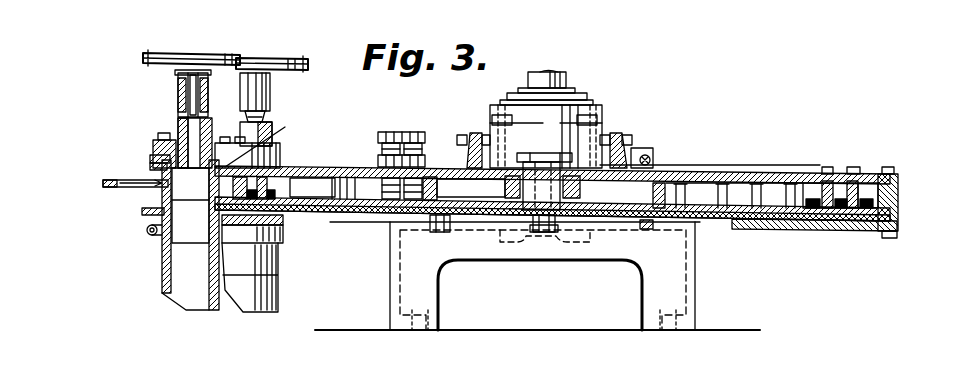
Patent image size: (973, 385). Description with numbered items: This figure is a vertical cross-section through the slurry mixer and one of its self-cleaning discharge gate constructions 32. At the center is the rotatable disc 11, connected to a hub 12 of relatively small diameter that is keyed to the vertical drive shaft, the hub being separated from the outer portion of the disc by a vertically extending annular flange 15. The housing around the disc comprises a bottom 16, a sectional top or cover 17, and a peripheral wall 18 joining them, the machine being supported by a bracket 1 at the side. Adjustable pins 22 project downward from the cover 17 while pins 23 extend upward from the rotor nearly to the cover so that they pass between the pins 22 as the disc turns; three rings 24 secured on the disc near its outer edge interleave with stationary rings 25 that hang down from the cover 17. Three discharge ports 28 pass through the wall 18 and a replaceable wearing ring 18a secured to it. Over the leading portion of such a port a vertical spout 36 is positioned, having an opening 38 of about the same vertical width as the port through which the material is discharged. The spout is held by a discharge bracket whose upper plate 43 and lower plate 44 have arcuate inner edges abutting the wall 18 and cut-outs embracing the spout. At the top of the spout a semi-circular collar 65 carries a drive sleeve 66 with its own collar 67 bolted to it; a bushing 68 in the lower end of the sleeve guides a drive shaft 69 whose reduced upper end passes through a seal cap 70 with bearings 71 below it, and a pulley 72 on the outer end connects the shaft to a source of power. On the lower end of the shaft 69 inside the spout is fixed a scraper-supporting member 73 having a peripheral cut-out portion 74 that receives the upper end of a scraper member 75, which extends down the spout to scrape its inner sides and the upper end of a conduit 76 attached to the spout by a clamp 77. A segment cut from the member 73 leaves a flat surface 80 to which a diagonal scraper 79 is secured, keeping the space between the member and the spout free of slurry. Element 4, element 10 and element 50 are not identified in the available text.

The bracket 1 is at (700, 300).
The upper plate 4 is at (323, 177).
The pedestal 10 is at (568, 78).
The rotatable disc 11 is at (778, 222).
The hub 12 is at (598, 222).
The annular flange 15 is at (668, 178).
The bottom 16 is at (800, 231).
The sectional top 17 is at (785, 178).
The peripheral wall 18 is at (900, 188).
The replaceable wearing ring 18a is at (880, 206).
The adjustable pins 22 is at (412, 132).
The pins 23 is at (754, 210).
The rings 24 is at (855, 213).
The rings 25 is at (853, 181).
The discharge port 28 is at (284, 220).
The discharge gate construction 32 is at (122, 192).
The spout 36 is at (150, 167).
The opening 38 is at (210, 210).
The upper plate 43 is at (150, 158).
The lower plate 44 is at (142, 213).
The arm 50 is at (103, 183).
The semi-circular collar 65 is at (155, 150).
The drive sleeve 66 is at (178, 101).
The semi-circular collar 67 is at (176, 140).
The bushing 68 is at (210, 132).
The drive shaft 69 is at (234, 108).
The seal cap 70 is at (178, 84).
The bearings 71 is at (200, 95).
The pulley 72 is at (163, 56).
The scraper-supporting member 73 is at (271, 130).
The cut-out portion 74 is at (185, 226).
The scraper member 75 is at (172, 239).
The conduit 76 is at (222, 312).
The clamp 77 is at (150, 236).
The scraper 79 is at (262, 132).
The surface 80 is at (286, 156).